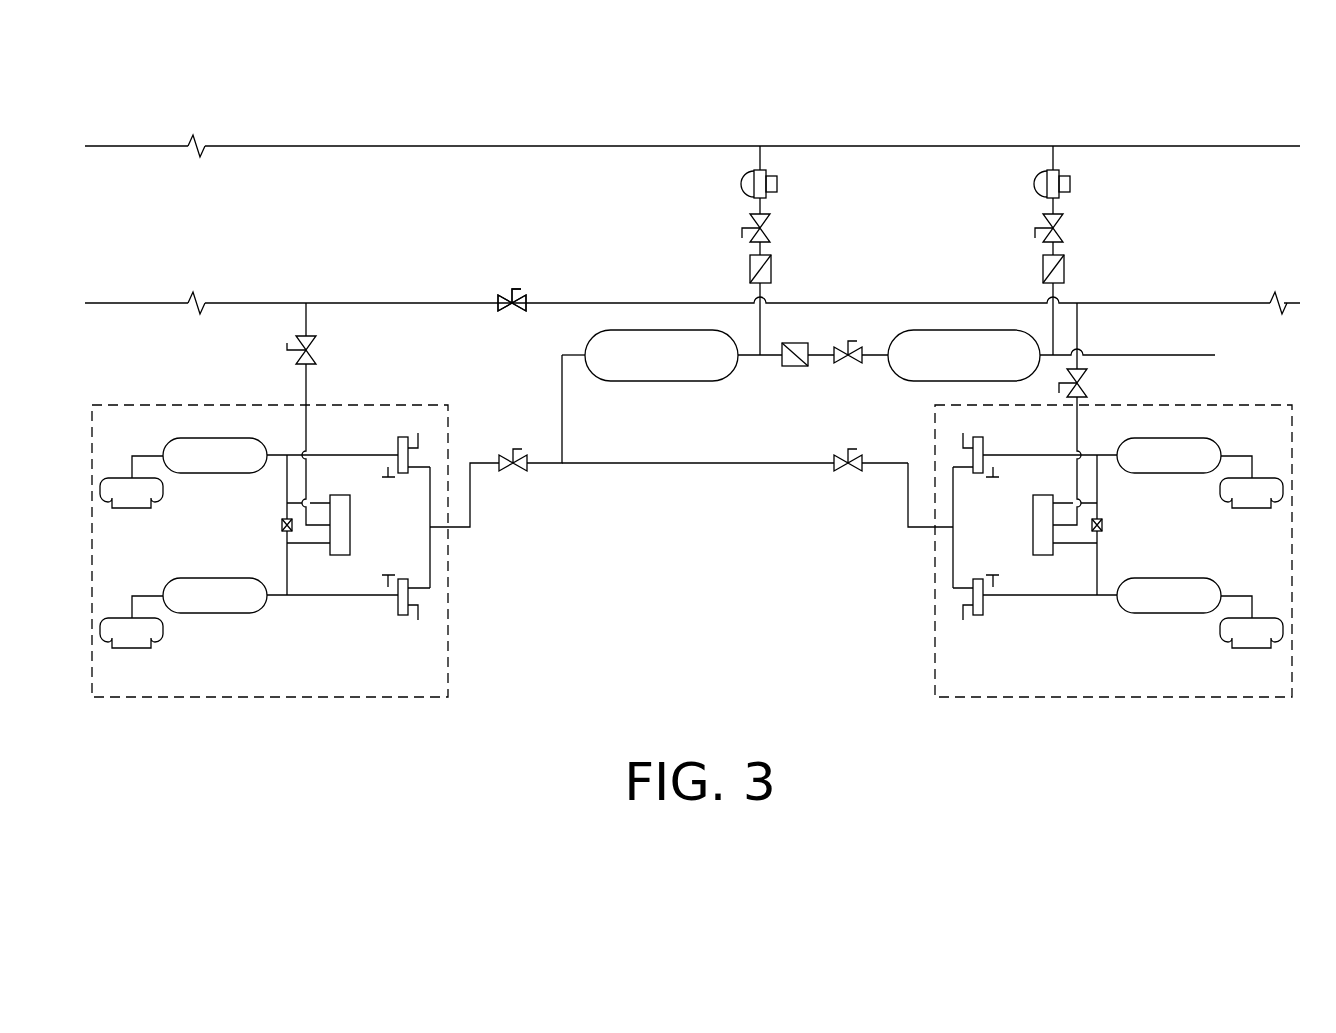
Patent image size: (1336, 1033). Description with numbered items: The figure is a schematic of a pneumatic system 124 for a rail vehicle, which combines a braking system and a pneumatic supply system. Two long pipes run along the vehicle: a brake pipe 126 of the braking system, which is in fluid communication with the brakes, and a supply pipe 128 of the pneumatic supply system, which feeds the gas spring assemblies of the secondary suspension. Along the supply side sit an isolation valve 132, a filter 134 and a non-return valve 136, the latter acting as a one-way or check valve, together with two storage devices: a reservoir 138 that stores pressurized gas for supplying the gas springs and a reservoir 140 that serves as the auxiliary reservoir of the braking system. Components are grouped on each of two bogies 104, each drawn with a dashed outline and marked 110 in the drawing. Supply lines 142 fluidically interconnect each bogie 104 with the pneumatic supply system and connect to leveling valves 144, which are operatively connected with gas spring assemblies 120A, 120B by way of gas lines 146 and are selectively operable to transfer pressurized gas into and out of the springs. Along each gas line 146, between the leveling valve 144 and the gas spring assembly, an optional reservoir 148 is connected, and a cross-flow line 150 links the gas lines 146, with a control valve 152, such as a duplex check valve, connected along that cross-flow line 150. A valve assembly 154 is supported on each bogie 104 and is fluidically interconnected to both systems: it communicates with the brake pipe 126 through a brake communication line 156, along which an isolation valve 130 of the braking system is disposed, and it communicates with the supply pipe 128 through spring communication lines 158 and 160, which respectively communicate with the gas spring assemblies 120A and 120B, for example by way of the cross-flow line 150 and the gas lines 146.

The bogie 104 is at (350, 662).
The vehicle axle assembly 110 is at (178, 700).
The gas spring assembly 120A is at (132, 497).
The gas spring assembly 120B is at (132, 625).
The pneumatic system 124 is at (1058, 114).
The brake pipe 126 is at (232, 303).
The supply pipe 128 is at (232, 145).
The isolation valve 130 is at (507, 293).
The isolation valve 132 is at (768, 230).
The filter 134 is at (780, 183).
The non-return valve 136 is at (772, 270).
The reservoir 138 is at (650, 355).
The reservoir 140 is at (964, 355).
The supply line 142 is at (432, 553).
The leveling valve 144 is at (398, 445).
The gas line 146 is at (300, 453).
The reservoir 148 is at (200, 447).
The cross-flow line 150 is at (285, 565).
The control valve 152 is at (280, 522).
The valve assembly 154 is at (345, 522).
The brake communication line 156 is at (312, 320).
The spring communication line 158 is at (308, 500).
The spring communication line 160 is at (308, 545).